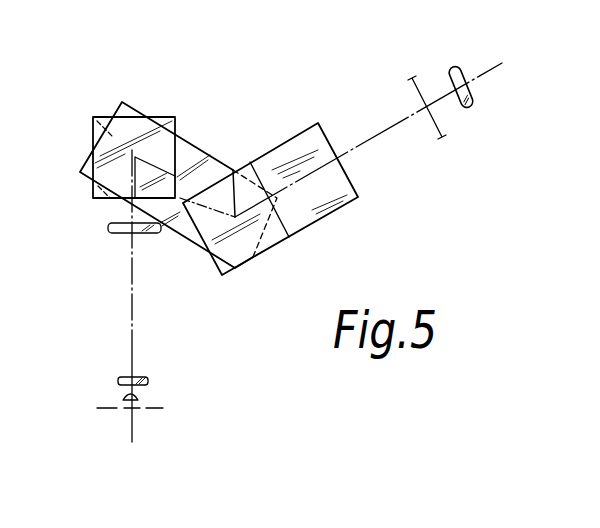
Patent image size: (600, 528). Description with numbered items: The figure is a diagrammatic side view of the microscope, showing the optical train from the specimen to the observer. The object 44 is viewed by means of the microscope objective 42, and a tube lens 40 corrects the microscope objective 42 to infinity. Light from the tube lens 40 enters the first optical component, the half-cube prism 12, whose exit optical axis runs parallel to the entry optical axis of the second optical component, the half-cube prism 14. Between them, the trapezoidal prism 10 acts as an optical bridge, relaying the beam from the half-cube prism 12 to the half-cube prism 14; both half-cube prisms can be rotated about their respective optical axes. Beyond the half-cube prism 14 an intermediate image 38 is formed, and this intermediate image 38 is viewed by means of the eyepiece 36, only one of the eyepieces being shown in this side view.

The trapezoidal prism 10 is at (192, 157).
The half-cube prism 12 is at (93, 198).
The half-cube prism 14 is at (283, 240).
The eyepiece 36 is at (455, 70).
The intermediate image 38 is at (420, 83).
The tube lens 40 is at (122, 233).
The microscope objective 42 is at (122, 377).
The object 44 is at (138, 396).